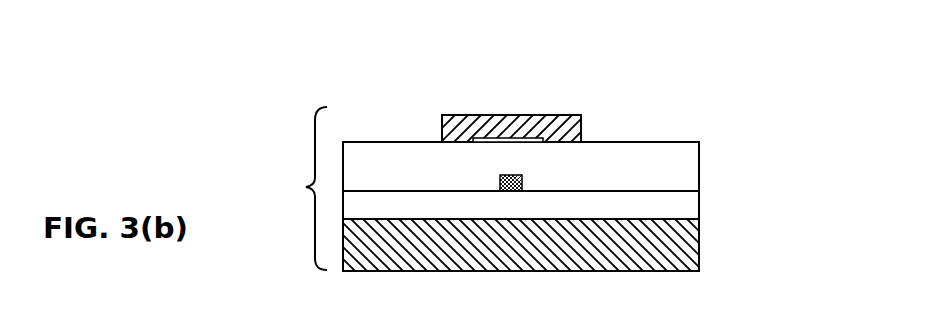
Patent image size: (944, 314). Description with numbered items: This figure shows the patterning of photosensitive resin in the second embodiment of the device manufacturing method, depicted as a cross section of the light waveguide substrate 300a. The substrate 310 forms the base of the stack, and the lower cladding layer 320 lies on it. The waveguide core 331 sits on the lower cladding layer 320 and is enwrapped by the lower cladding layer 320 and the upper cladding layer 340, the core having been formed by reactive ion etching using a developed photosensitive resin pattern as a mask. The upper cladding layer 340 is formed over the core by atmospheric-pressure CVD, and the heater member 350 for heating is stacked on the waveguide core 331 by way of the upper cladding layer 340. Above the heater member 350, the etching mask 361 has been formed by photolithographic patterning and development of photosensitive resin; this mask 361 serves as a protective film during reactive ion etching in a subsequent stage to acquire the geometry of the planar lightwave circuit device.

The light waveguide substrate 300a is at (307, 187).
The substrate 310 is at (698, 250).
The lower cladding layer 320 is at (688, 207).
The waveguide core 331 is at (523, 176).
The upper cladding layer 340 is at (690, 158).
The heater member 350 is at (495, 142).
The etching mask 361 is at (563, 115).